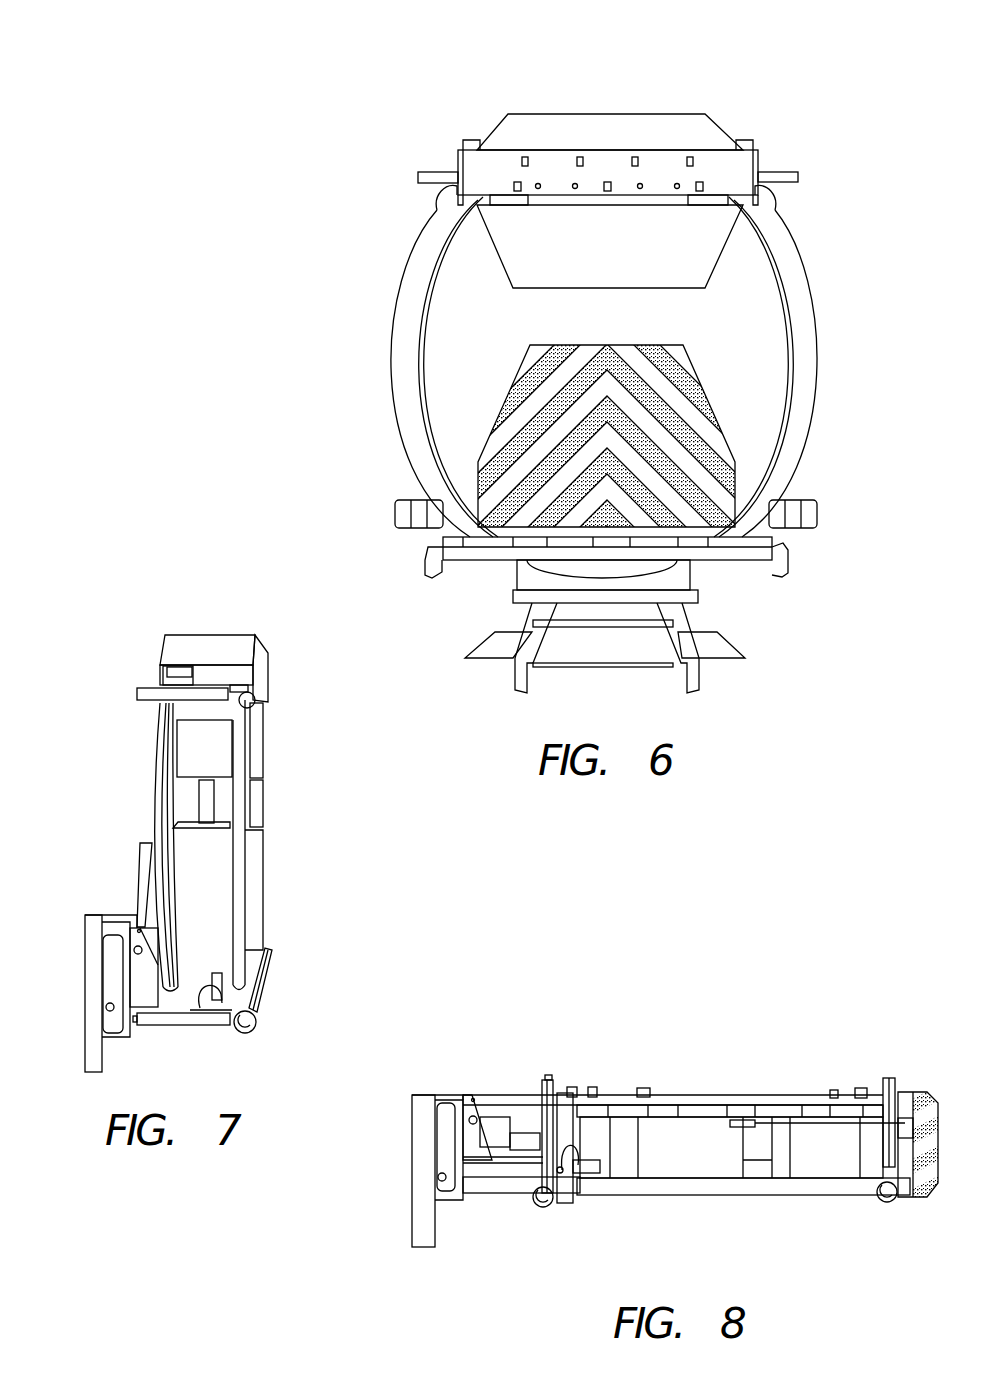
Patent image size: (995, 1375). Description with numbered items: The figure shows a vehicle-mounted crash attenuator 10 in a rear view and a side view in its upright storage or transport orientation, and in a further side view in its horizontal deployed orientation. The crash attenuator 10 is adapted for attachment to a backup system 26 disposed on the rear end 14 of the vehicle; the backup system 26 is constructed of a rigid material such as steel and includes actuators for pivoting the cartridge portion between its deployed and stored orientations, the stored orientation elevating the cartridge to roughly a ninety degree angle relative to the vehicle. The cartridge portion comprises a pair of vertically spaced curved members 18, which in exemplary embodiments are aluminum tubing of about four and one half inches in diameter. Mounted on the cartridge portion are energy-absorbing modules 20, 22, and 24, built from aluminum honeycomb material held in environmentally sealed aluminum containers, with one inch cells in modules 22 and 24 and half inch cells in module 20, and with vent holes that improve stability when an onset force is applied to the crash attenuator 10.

In FIG. 6, the crash attenuator 10 is at (352, 237).
In FIG. 7, the crash attenuator 10 is at (98, 693).
In FIG. 8, the crash attenuator 10 is at (778, 1075).
In FIG. 7, the rear end 14 is at (85, 917).
In FIG. 8, the rear end 14 is at (420, 1243).
In FIG. 6, the curved members 18 is at (395, 373).
In FIG. 7, the curved members 18 is at (160, 767).
In FIG. 8, the curved members 18 is at (605, 1187).
In FIG. 6, the energy-absorbing module 20 is at (693, 117).
In FIG. 7, the energy-absorbing module 20 is at (218, 643).
In FIG. 8, the energy-absorbing module 20 is at (928, 1098).
In FIG. 6, the energy-absorbing module 22 is at (693, 230).
In FIG. 7, the energy-absorbing module 22 is at (252, 753).
In FIG. 8, the energy-absorbing module 22 is at (693, 1158).
In FIG. 6, the energy-absorbing module 24 is at (687, 380).
In FIG. 7, the energy-absorbing module 24 is at (253, 888).
In FIG. 8, the energy-absorbing module 24 is at (823, 1163).
In FIG. 6, the backup system 26 is at (800, 552).
In FIG. 7, the backup system 26 is at (282, 953).
In FIG. 8, the backup system 26 is at (555, 1078).